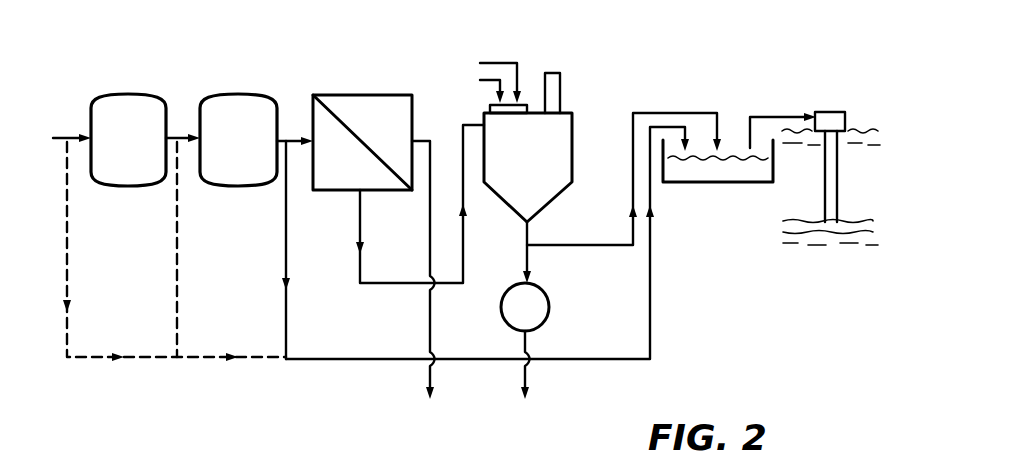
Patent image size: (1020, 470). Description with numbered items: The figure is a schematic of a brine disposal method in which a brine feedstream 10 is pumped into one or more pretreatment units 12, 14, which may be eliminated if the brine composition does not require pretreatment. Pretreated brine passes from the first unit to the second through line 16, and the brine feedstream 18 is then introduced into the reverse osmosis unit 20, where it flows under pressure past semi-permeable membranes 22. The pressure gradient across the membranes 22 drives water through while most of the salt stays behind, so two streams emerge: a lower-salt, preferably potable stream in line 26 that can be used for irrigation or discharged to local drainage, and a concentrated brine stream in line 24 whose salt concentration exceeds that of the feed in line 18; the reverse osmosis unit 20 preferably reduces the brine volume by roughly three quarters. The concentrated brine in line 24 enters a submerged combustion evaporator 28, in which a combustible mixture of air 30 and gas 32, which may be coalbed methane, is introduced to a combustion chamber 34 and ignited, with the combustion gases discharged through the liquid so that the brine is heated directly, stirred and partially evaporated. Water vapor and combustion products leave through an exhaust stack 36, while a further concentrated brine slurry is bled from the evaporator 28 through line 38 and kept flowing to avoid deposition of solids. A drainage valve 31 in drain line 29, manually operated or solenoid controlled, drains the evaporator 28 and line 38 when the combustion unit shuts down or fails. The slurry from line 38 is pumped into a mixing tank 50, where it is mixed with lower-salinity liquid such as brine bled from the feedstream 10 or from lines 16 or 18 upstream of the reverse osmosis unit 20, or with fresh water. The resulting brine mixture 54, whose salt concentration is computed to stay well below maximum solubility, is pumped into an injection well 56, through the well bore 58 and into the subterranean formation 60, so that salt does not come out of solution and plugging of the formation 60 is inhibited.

The brine feedstream 10 is at (68, 135).
The pretreatment unit 12 is at (128, 92).
The pretreatment unit 14 is at (232, 188).
The pretreated brine stream line 16 is at (172, 133).
The brine feedstream 18 is at (285, 135).
The reverse osmosis unit 20 is at (343, 95).
The semi-permeable membrane 22 is at (349, 128).
The concentrated brine stream line 24 is at (380, 283).
The potable water stream line 26 is at (428, 254).
The submerged combustion evaporator 28 is at (573, 127).
The drain line 29 is at (530, 253).
The air 30 is at (480, 63).
The drainage valve 31 is at (549, 307).
The gas 32 is at (480, 80).
The combustion chamber 34 is at (484, 110).
The exhaust stack 36 is at (560, 85).
The concentrated brine slurry line 38 is at (600, 245).
The mixing tank 50 is at (722, 183).
The brine mixture 54 is at (770, 117).
The injection well 56 is at (838, 112).
The well bore 58 is at (838, 165).
The subterranean formation 60 is at (815, 218).